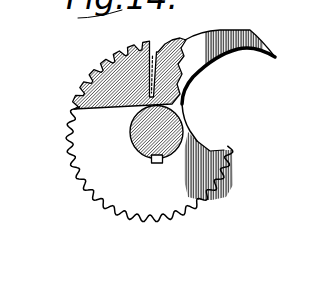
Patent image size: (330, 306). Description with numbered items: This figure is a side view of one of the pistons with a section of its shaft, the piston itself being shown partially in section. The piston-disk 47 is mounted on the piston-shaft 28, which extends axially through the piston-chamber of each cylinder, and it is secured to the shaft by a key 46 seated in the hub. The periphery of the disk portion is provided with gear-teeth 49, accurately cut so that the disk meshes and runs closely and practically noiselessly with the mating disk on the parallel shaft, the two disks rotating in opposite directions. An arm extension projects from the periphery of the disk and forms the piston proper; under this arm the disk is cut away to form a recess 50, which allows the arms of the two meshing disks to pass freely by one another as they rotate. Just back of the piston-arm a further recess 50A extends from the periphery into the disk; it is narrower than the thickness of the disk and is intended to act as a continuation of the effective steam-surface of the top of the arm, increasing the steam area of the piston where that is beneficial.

The recess 50A is at (183, 109).
The recess 50 is at (174, 81).
The piston-shaft 28 is at (172, 134).
The key 46 is at (152, 161).
The piston-disk 47 is at (177, 186).
The gear-teeth 49 is at (78, 173).